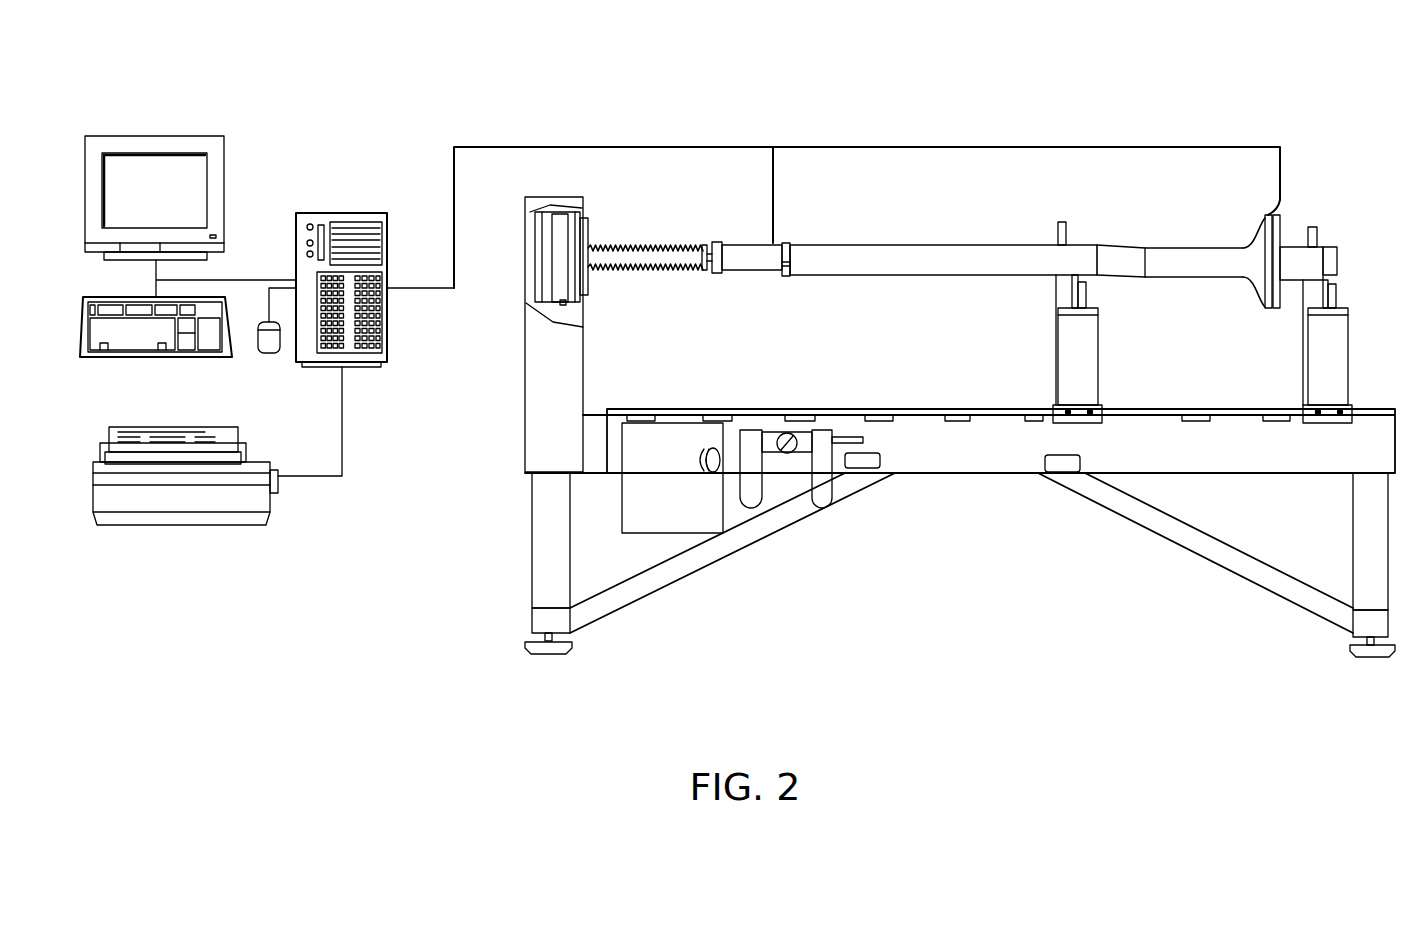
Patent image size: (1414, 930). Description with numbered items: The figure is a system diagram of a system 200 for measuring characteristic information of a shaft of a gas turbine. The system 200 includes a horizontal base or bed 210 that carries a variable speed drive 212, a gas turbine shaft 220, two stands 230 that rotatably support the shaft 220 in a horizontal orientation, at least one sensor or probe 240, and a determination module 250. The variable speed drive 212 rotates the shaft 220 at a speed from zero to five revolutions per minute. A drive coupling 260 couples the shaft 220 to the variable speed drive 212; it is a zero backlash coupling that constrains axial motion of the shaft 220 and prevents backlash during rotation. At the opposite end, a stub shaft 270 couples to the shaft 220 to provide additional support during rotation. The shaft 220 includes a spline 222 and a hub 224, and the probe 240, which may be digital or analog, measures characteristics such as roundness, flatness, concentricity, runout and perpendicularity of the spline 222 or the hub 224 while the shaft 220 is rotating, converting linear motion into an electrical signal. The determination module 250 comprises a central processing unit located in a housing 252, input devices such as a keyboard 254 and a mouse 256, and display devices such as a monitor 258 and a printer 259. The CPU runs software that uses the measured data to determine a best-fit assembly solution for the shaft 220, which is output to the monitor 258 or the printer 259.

The system 200 is at (797, 104).
The horizontal base 210 is at (946, 465).
The variable speed drive 212 is at (558, 292).
The gas turbine shaft 220 is at (876, 248).
The spline 222 is at (750, 268).
The hub 224 is at (1258, 285).
The stand 230 is at (1092, 358).
The sensor or probe 240 is at (773, 242).
The determination module 250 is at (326, 157).
The housing 252 is at (352, 213).
The keyboard 254 is at (138, 358).
The mouse 256 is at (268, 353).
The monitor 258 is at (158, 136).
The printer 259 is at (184, 513).
The drive coupling 260 is at (641, 250).
The stub shaft 270 is at (1322, 247).